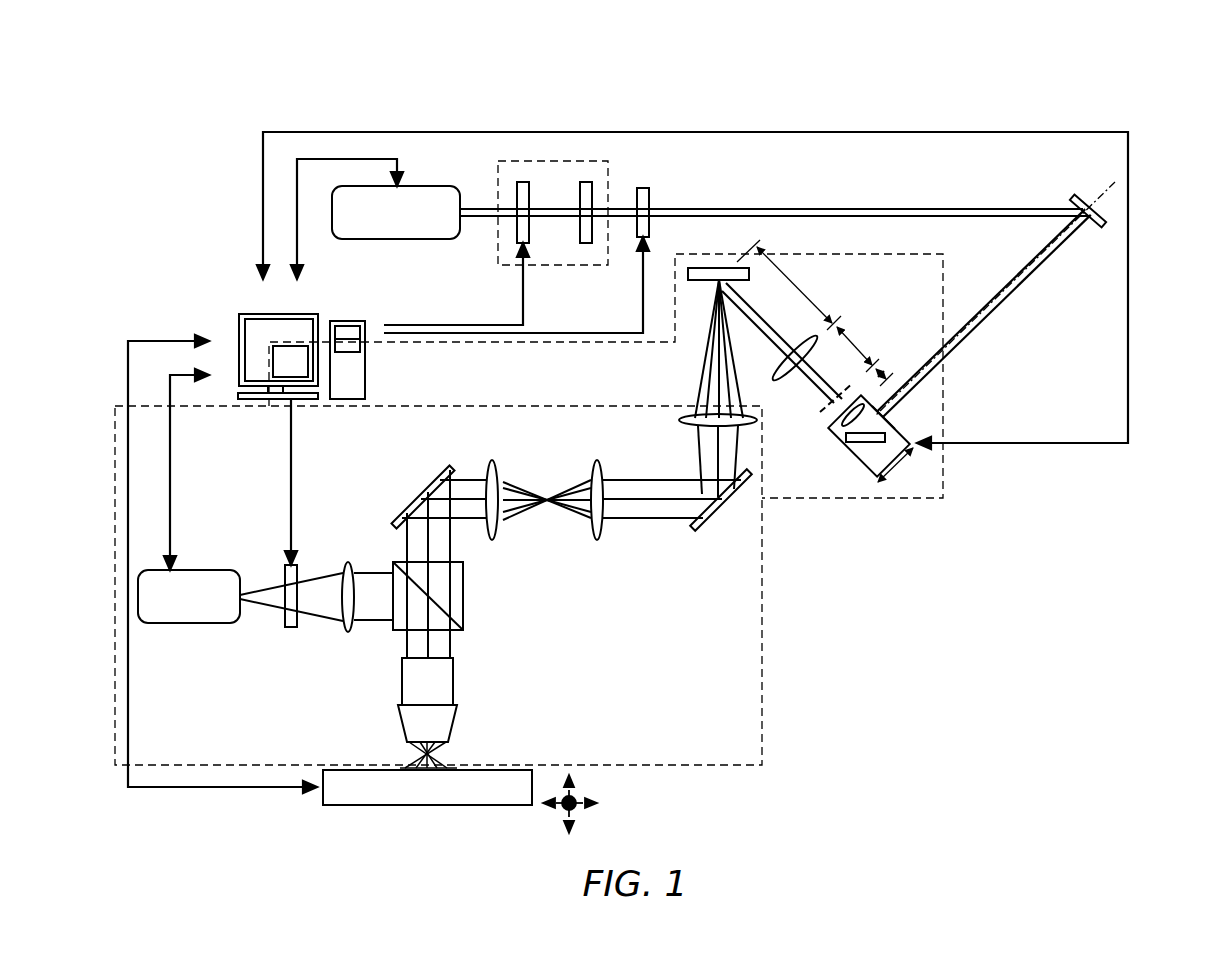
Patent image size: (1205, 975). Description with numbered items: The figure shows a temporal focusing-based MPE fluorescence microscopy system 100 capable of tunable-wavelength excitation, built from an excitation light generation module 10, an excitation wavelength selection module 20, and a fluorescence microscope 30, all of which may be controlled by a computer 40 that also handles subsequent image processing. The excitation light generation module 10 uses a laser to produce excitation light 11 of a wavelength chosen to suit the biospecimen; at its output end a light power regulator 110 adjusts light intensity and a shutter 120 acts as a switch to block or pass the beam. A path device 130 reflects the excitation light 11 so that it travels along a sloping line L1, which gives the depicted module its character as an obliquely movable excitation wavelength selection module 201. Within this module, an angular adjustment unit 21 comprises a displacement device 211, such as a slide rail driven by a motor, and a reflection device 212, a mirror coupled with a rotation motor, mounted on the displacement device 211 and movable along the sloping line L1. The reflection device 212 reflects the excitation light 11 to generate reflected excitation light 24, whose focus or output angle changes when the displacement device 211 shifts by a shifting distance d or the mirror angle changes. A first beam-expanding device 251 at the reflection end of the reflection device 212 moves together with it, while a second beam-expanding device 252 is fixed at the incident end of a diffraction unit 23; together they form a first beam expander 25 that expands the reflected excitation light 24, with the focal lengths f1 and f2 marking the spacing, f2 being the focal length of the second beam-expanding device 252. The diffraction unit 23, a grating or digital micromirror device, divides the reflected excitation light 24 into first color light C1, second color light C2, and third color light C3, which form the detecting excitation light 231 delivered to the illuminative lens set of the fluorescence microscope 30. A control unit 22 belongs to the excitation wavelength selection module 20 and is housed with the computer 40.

The temporal focusing-based MPE fluorescence microscopy system 100 is at (1192, 70).
The excitation light generation module 10 is at (425, 186).
The excitation light 11 is at (1047, 240).
The light power regulator 110 is at (558, 161).
The shutter 120 is at (643, 188).
The path device 130 is at (1083, 197).
The sloping line L1 is at (1100, 198).
The excitation wavelength selection module 20 is at (668, 376).
The obliquely movable excitation wavelength selection module 201 is at (943, 475).
The angular adjustment unit 21 is at (850, 494).
The displacement device 211 is at (876, 462).
The reflection device 212 is at (848, 445).
The control unit 22 is at (279, 372).
The diffraction unit 23 is at (710, 268).
The detecting excitation light 231 is at (575, 345).
The first color light C1 is at (733, 350).
The second color light C2 is at (722, 373).
The third color light C3 is at (702, 402).
The reflected excitation light 24 is at (810, 383).
The first beam expander 25 is at (886, 342).
The first beam-expanding device 251 is at (880, 398).
The second beam-expanding device 252 is at (847, 405).
The fluorescence microscope 30 is at (762, 707).
The computer 40 is at (328, 326).
The shifting distance d is at (896, 469).
The focal length of first beam-expanding device f1 is at (887, 366).
The focal length of the second beam-expanding device f2 is at (808, 306).